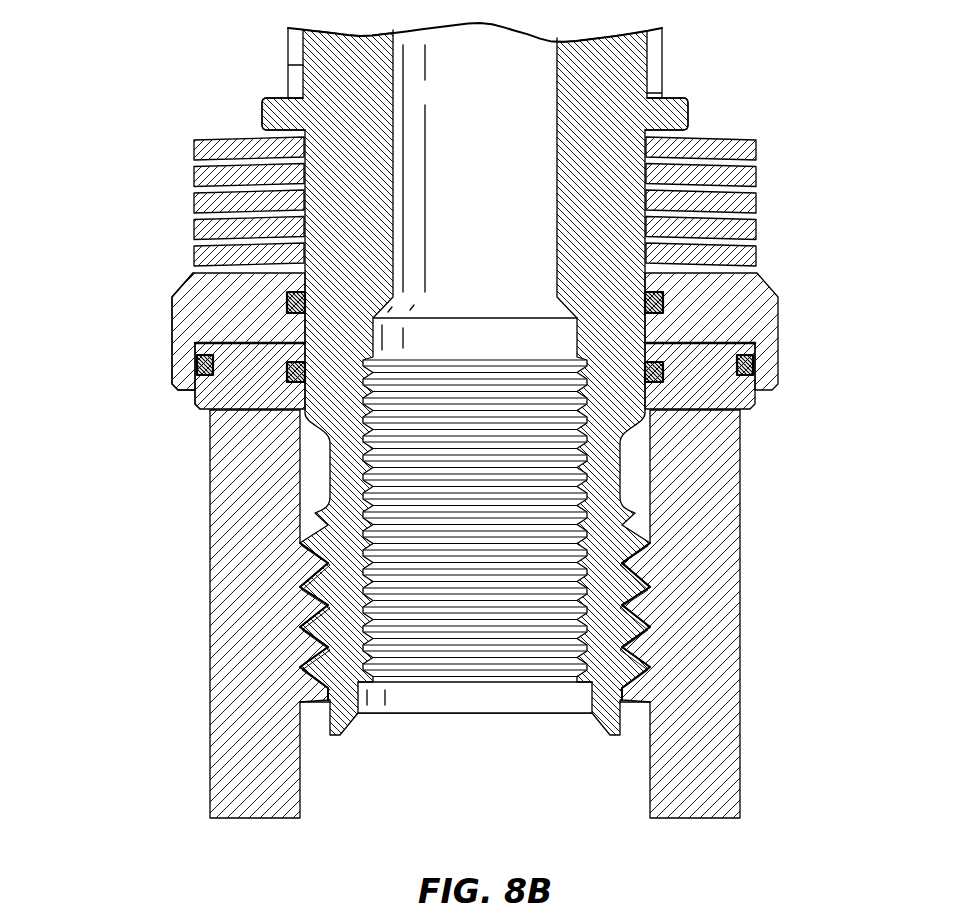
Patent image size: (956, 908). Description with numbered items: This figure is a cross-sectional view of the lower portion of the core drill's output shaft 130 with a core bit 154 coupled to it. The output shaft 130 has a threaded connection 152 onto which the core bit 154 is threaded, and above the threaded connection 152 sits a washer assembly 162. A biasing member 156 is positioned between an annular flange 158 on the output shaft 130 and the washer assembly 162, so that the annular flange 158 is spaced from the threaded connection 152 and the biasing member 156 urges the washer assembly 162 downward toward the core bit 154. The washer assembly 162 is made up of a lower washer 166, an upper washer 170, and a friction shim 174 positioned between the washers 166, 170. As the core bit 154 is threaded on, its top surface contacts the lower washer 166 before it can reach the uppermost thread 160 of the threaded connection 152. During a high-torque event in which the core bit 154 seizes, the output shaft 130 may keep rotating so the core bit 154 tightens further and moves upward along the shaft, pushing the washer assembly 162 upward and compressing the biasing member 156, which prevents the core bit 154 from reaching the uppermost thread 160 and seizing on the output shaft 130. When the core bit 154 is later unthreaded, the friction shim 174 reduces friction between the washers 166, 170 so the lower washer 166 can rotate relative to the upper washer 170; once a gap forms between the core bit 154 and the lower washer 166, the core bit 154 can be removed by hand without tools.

The output shaft 130 is at (288, 65).
The threaded connection 152 is at (307, 621).
The core bit 154 is at (237, 770).
The biasing member 156 is at (205, 197).
The annular flange 158 is at (262, 113).
The uppermost thread 160 is at (323, 517).
The washer assembly 162 is at (152, 366).
The lower washer 166 is at (757, 397).
The upper washer 170 is at (747, 312).
The friction shim 174 is at (701, 345).